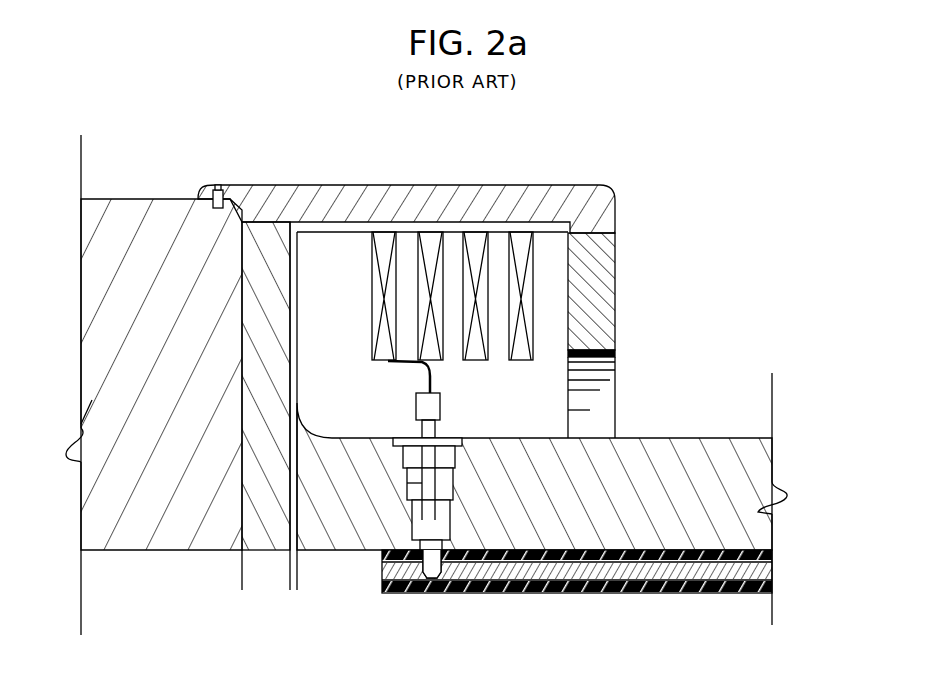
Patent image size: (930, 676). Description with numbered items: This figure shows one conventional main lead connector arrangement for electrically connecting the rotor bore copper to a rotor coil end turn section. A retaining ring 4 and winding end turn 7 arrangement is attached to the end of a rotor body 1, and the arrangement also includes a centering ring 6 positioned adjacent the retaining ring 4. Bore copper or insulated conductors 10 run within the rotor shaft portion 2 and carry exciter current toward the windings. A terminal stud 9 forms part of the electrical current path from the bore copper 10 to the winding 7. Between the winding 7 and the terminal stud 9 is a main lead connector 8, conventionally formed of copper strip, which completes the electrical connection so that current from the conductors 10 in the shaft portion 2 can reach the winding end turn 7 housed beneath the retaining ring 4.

The rotor body 1 is at (119, 393).
The rotor shaft portion 2 is at (663, 501).
The retaining ring 4 is at (590, 198).
The centering ring 6 is at (605, 287).
The winding end turn 7 is at (383, 331).
The main lead connector 8 is at (421, 369).
The terminal stud 9 is at (437, 484).
The bore copper 10 is at (532, 550).